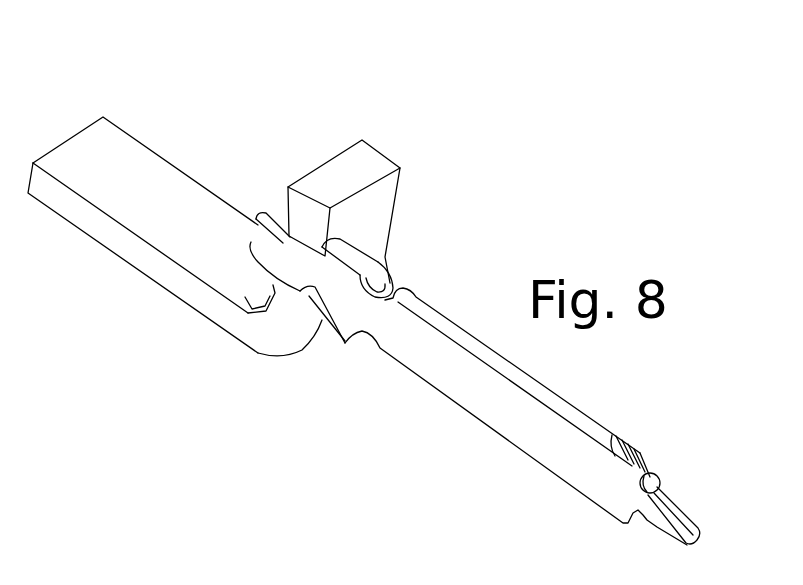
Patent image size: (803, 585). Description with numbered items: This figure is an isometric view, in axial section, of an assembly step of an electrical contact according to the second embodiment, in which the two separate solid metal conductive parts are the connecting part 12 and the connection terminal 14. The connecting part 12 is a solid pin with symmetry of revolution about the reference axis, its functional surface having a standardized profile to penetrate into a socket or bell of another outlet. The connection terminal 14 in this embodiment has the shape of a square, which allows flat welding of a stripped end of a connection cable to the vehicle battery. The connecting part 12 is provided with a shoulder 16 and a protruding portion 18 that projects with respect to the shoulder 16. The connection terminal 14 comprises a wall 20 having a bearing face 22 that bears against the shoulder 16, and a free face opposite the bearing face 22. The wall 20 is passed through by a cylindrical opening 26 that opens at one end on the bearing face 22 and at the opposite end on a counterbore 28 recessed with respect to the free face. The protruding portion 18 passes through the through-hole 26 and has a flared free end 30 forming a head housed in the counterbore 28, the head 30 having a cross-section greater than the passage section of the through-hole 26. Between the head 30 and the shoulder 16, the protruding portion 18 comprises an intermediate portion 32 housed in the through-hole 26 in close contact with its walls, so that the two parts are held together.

The connecting part 12 is at (520, 432).
The connection terminal 14 is at (105, 158).
The shoulder 16 is at (320, 256).
The protruding portion 18 is at (232, 146).
The wall 20 is at (287, 313).
The bearing face 22 is at (379, 226).
The cylindrical opening 26 is at (306, 285).
The counterbore 28 is at (283, 277).
The flared free end 30 is at (250, 243).
The intermediate portion 32 is at (270, 240).